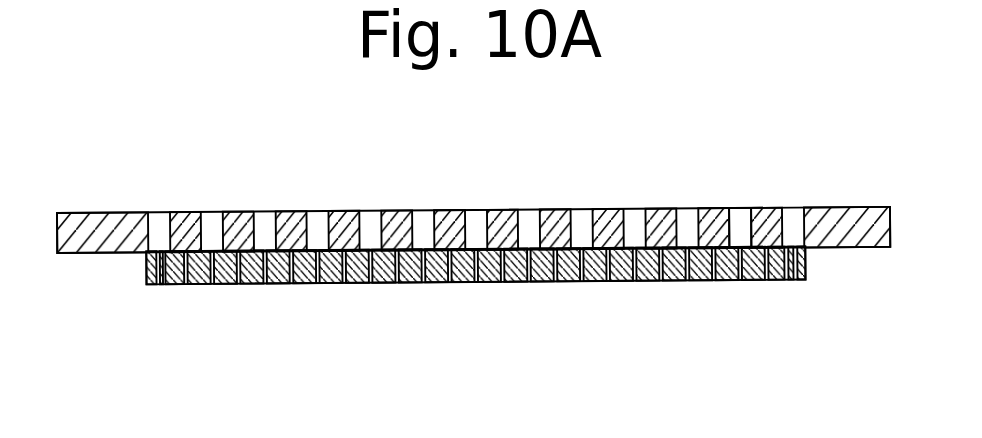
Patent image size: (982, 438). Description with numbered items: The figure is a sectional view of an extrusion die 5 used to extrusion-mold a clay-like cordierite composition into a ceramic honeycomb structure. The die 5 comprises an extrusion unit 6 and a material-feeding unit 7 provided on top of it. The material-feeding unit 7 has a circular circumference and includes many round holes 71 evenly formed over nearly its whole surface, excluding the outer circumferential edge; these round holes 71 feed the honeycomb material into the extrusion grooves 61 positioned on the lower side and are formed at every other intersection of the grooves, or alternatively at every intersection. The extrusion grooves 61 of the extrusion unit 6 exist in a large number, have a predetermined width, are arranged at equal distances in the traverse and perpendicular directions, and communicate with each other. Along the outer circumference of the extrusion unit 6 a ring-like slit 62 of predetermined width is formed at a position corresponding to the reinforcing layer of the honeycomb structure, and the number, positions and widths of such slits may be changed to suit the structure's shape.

The extrusion die 5 is at (276, 213).
The material-feeding unit 7 is at (842, 206).
The round holes 71 is at (739, 222).
The extrusion unit 6 is at (806, 262).
The extrusion grooves 61 is at (740, 282).
The ring-like slit 62 is at (167, 287).